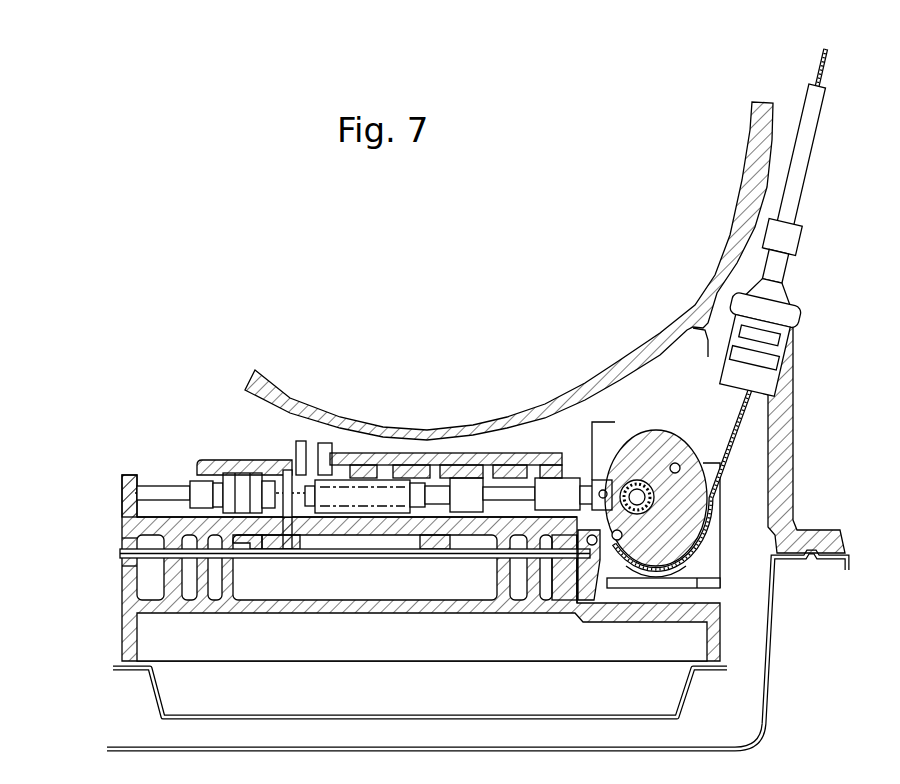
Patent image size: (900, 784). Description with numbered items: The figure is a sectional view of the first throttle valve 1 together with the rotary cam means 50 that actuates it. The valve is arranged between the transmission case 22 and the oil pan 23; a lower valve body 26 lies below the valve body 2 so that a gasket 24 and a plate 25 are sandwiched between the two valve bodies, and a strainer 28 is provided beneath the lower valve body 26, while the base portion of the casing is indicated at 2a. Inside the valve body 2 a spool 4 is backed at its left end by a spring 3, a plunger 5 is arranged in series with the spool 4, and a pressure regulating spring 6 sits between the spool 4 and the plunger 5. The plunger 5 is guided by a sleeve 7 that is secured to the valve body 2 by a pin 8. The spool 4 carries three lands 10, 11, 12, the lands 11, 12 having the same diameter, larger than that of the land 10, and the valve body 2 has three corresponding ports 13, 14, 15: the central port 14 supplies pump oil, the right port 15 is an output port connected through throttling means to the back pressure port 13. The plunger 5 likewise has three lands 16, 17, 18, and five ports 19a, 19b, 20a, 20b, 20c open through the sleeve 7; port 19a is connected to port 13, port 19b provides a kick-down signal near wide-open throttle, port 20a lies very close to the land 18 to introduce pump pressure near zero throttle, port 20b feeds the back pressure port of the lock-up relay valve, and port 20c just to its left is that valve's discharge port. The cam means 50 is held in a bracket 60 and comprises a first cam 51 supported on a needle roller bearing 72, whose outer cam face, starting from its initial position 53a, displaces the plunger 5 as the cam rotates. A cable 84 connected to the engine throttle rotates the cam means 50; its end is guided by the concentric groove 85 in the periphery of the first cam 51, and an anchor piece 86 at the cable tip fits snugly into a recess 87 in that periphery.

The first throttle valve 1 is at (205, 393).
The valve body 2 is at (258, 468).
The casing base portion 2a is at (512, 560).
The spring 3 is at (145, 477).
The spool 4 is at (210, 480).
The plunger 5 is at (527, 476).
The pressure regulating spring 6 is at (342, 478).
The sleeve 7 is at (440, 464).
The pin 8 is at (560, 560).
The land 10 is at (192, 484).
The land 11 is at (238, 485).
The land 12 is at (298, 475).
The port 13 is at (235, 547).
The port 14 is at (262, 547).
The port 15 is at (288, 547).
The land 16 is at (415, 482).
The land 17 is at (462, 476).
The land 18 is at (572, 476).
The port 19a is at (433, 547).
The port 19b is at (388, 452).
The port 20a is at (562, 452).
The port 20b is at (512, 464).
The port 20c is at (471, 464).
The transmission case 22 is at (628, 350).
The oil pan 23 is at (770, 683).
The gasket 24 is at (122, 540).
The plate 25 is at (120, 553).
The lower valve body 26 is at (128, 622).
The strainer 28 is at (152, 697).
The cam means 50 is at (670, 421).
The first cam 51 is at (688, 442).
The initial position 53a is at (612, 425).
The bracket 60 is at (700, 583).
The needle roller bearing 72 is at (660, 498).
The cable 84 is at (735, 432).
The groove 85 is at (654, 576).
The anchor piece 86 is at (608, 576).
The recess 87 is at (592, 560).